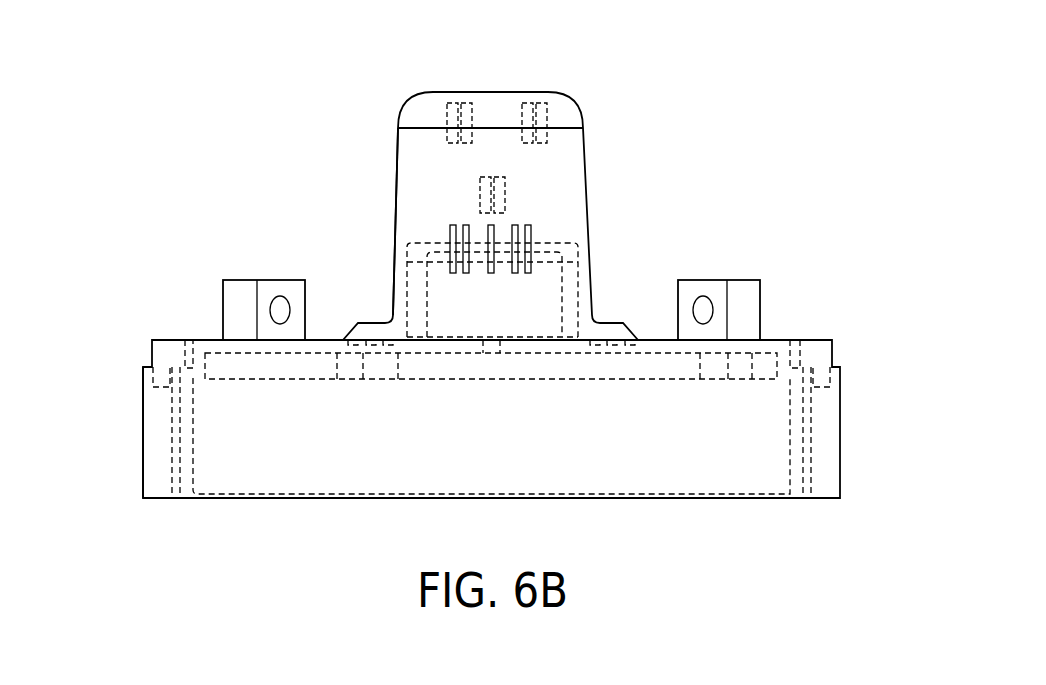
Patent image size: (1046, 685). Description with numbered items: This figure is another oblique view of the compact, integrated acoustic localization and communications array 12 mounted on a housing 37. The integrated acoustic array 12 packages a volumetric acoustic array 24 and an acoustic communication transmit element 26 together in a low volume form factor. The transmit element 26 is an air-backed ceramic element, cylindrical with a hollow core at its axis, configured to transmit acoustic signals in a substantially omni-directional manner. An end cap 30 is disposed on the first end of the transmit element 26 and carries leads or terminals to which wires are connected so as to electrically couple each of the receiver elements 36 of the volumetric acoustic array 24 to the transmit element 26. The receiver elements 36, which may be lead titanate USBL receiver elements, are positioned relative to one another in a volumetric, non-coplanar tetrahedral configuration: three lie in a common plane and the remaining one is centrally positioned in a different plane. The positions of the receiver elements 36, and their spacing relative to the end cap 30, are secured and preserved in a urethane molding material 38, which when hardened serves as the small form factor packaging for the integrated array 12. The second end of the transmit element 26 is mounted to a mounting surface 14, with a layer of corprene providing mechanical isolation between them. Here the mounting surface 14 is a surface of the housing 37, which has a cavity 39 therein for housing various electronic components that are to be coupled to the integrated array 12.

The integrated acoustic array 12 is at (381, 88).
The volumetric acoustic array 24 is at (572, 98).
The molding material 38 is at (418, 162).
The receiver elements 36 is at (547, 135).
The end cap 30 is at (413, 247).
The transmit element 26 is at (565, 282).
The mounting surface 14 is at (648, 340).
The housing 37 is at (158, 435).
The cavity 39 is at (353, 460).